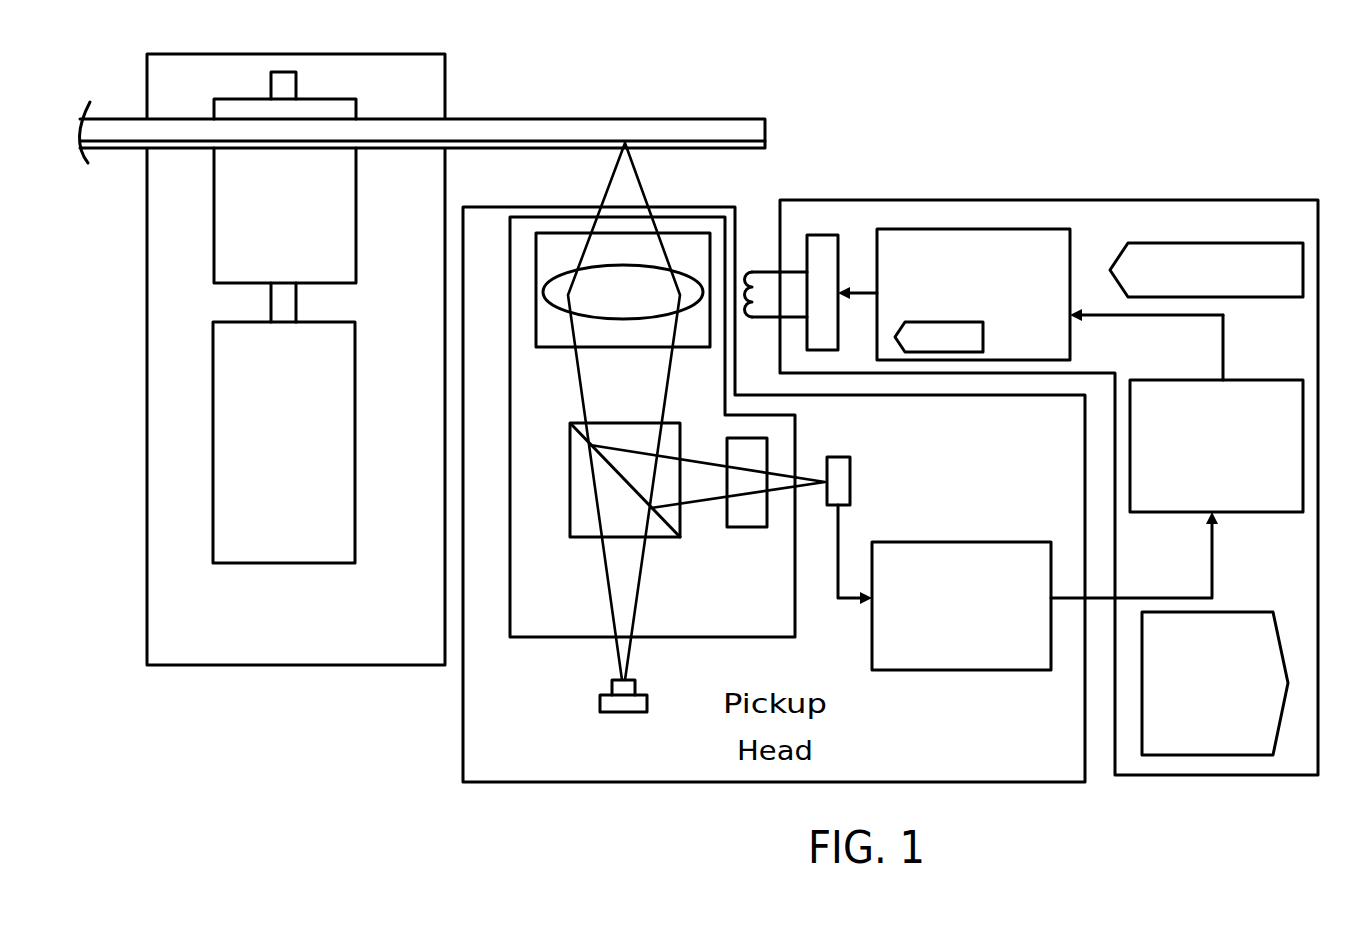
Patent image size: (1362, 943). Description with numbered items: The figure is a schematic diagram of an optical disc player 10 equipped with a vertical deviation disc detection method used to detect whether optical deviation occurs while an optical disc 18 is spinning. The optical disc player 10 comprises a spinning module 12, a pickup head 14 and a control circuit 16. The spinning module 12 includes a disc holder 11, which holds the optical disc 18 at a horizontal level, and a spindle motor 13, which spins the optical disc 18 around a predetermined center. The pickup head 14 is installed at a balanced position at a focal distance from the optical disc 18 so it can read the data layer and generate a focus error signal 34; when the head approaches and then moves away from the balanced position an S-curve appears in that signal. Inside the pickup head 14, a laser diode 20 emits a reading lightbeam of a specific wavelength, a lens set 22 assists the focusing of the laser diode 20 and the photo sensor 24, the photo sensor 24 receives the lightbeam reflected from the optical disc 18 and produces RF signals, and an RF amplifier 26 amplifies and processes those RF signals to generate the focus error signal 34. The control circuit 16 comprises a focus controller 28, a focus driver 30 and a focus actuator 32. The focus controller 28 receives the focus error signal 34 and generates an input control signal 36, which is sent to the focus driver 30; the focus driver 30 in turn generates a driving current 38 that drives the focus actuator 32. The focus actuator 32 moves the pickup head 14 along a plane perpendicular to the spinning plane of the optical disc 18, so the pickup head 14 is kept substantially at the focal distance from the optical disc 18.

The optical disc player 10 is at (916, 168).
The disc holder 11 is at (356, 240).
The spinning module 12 is at (350, 54).
The spindle motor 13 is at (355, 412).
The pickup head 14 is at (663, 207).
The control circuit 16 is at (1042, 200).
The optical disc 18 is at (513, 118).
The laser diode 20 is at (643, 693).
The lens set 22 is at (562, 637).
The photo sensor 24 is at (850, 493).
The RF amplifier 26 is at (940, 542).
The focus controller 28 is at (1238, 380).
The focus driver 30 is at (990, 229).
The focus actuator 32 is at (838, 240).
The focus error signal 34 is at (1232, 612).
The input control signal 36 is at (1160, 243).
The driving current 38 is at (983, 340).